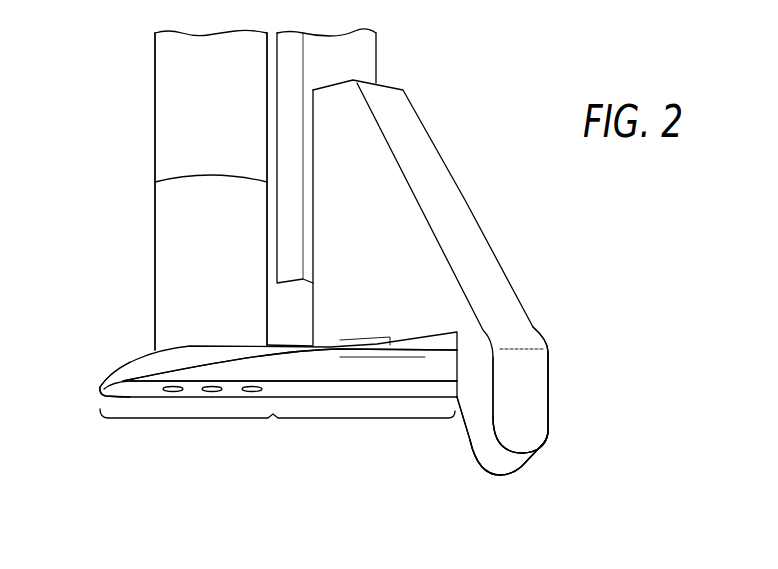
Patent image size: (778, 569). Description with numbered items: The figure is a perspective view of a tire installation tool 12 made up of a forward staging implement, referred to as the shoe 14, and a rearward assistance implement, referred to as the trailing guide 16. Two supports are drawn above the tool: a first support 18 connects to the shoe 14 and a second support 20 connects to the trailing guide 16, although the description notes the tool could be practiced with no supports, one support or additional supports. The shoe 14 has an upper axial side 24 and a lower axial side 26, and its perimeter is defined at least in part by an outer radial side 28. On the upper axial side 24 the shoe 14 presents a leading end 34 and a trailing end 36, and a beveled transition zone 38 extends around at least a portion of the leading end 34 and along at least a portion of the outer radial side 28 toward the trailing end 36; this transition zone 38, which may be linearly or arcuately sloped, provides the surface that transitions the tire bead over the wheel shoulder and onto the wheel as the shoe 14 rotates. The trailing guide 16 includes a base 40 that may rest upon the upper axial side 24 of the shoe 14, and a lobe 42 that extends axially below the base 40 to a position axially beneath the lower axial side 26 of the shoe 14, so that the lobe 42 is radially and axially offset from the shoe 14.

The tire installation tool 12 is at (128, 120).
The shoe 14 is at (87, 364).
The trailing guide 16 is at (588, 377).
The first support 18 is at (163, 70).
The second support 20 is at (371, 47).
The upper axial side 24 is at (288, 334).
The lower axial side 26 is at (230, 406).
The outer radial side 28 is at (331, 368).
The leading end 34 is at (100, 381).
The trailing end 36 is at (561, 347).
The beveled transition zone 38 is at (277, 432).
The base 40 is at (440, 175).
The lobe 42 is at (530, 423).